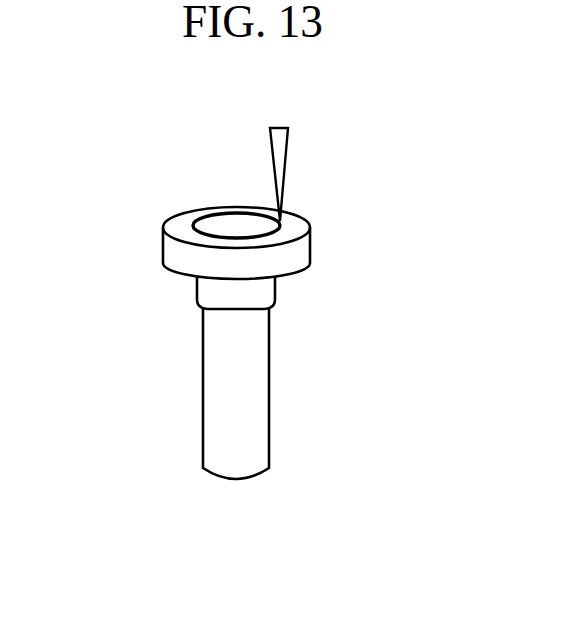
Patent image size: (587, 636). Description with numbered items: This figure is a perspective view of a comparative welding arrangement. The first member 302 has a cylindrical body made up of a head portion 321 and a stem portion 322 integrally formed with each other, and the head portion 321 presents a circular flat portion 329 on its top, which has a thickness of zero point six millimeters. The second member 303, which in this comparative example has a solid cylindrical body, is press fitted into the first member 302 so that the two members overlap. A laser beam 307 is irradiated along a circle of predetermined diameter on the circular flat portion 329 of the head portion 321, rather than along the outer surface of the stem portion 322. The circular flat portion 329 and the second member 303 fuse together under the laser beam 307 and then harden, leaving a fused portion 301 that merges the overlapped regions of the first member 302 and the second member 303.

The fused portion 301 is at (197, 223).
The circular flat portion 329 is at (243, 226).
The laser beam 307 is at (282, 152).
The head portion 321 is at (292, 255).
The first member 302 is at (288, 273).
The stem portion 322 is at (213, 292).
The second member 303 is at (250, 424).